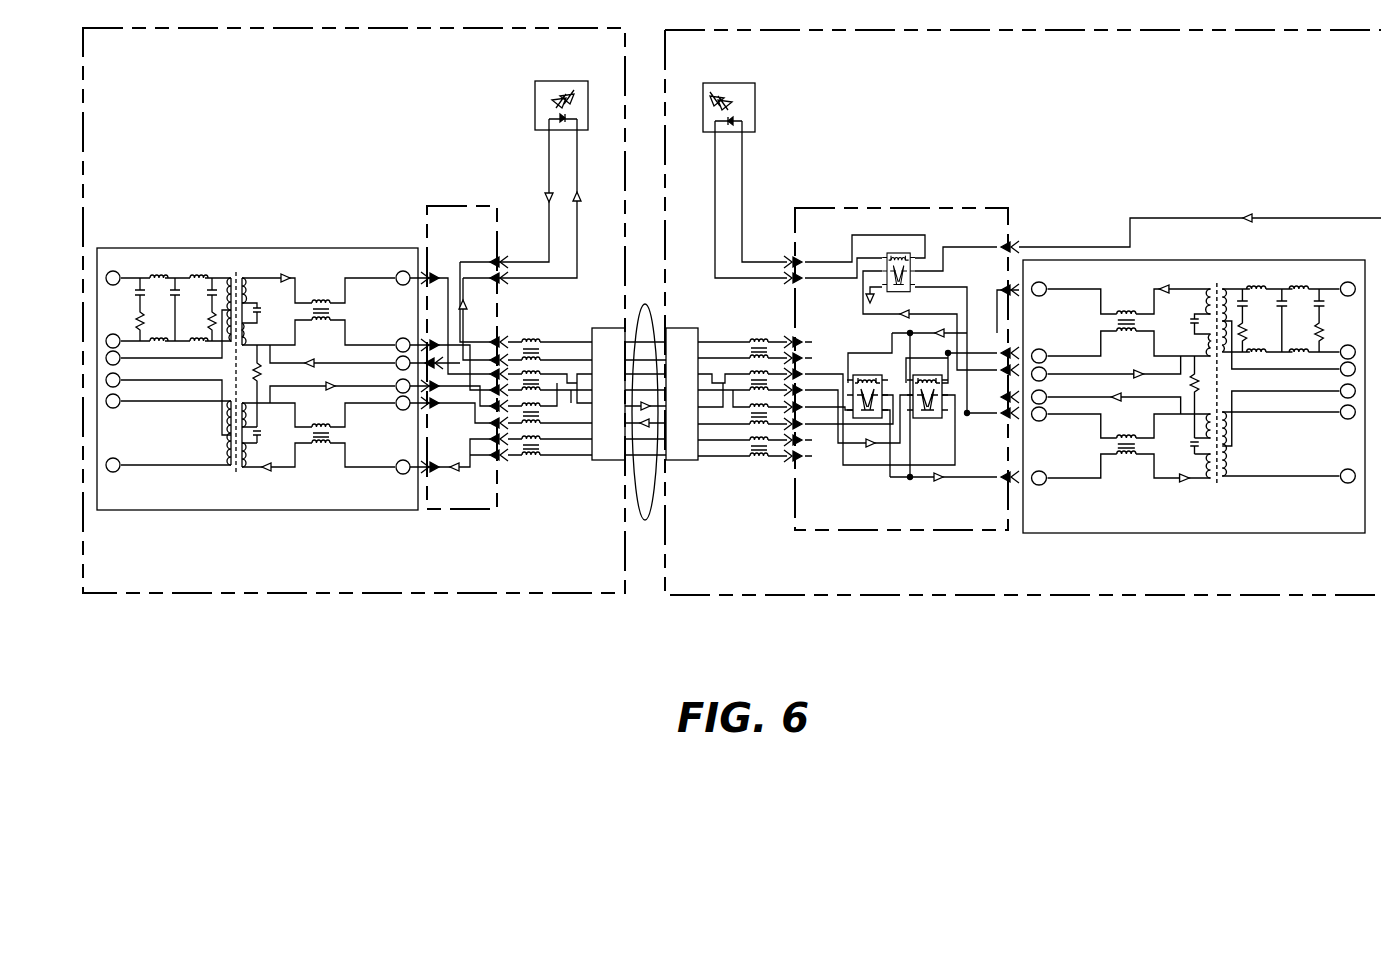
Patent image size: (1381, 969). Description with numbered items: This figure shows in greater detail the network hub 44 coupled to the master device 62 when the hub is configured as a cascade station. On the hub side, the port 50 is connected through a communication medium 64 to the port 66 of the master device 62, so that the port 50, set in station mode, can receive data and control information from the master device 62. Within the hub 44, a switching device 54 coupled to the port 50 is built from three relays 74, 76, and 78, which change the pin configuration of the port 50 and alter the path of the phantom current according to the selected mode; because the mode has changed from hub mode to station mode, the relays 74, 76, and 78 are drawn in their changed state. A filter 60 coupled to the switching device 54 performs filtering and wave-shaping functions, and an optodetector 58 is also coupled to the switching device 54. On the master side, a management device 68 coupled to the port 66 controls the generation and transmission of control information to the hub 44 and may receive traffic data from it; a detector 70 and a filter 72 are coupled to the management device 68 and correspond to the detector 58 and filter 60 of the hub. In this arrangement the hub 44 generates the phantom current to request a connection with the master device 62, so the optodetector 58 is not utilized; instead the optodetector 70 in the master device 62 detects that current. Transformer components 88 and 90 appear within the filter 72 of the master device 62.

The network hub 44 is at (1023, 312).
The port 50 is at (695, 460).
The switching device 54 is at (1082, 369).
The detector 58 is at (756, 100).
The filter 60 is at (1194, 396).
The master device 62 is at (354, 310).
The communication medium 64 is at (646, 521).
The port 66 is at (594, 462).
The management device 68 is at (467, 357).
The detector 70 is at (535, 100).
The filter 72 is at (253, 379).
The relay 74 is at (886, 254).
The relay 76 is at (862, 374).
The relay 78 is at (933, 411).
The transmit transformer 88 is at (220, 270).
The receive transformer 90 is at (247, 480).